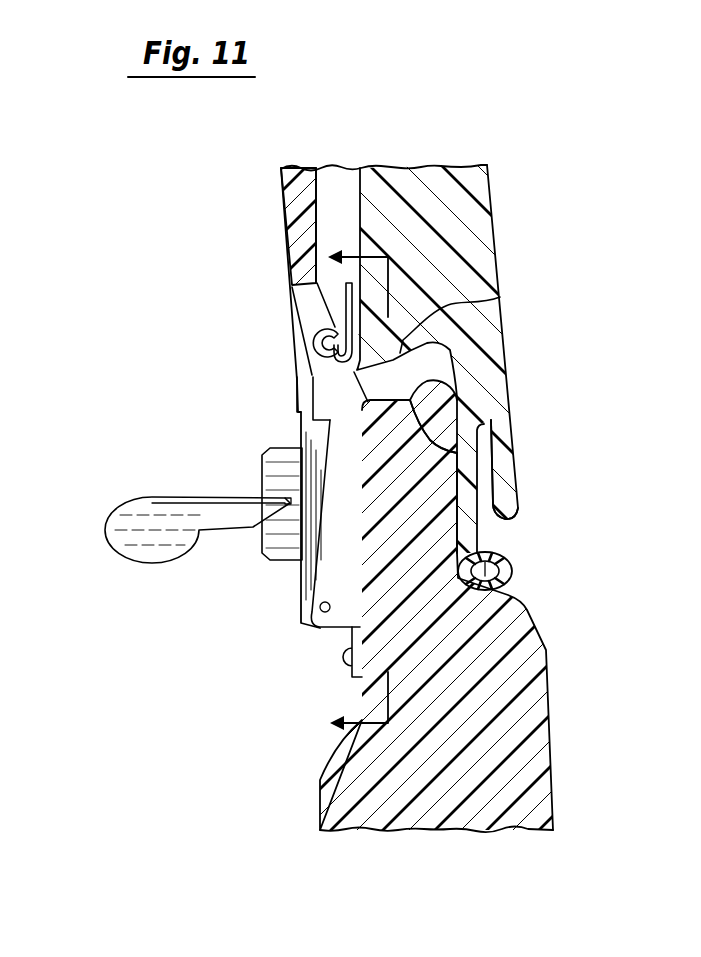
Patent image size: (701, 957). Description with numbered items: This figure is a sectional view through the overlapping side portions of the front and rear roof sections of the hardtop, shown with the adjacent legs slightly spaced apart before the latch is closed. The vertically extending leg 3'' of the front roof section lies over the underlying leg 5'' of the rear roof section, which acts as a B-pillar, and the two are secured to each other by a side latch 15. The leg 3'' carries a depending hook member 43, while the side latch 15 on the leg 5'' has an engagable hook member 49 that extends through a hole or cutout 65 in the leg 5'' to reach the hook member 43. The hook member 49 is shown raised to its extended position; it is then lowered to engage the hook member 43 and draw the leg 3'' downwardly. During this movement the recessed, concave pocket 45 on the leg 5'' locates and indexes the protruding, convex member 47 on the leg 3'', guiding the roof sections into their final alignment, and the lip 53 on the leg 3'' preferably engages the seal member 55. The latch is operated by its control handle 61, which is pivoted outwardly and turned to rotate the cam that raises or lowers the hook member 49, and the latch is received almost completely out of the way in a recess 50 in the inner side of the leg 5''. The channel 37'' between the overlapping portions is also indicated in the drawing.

The leg of the overlapping portion of the front roof section 3'' is at (476, 398).
The leg of the overlapping portion of the rear roof section 5'' is at (361, 531).
The side latch 15 is at (210, 342).
The channel 37'' is at (364, 193).
The depending hook member 43 is at (300, 389).
The recessed pocket 45 is at (420, 400).
The protruding member 47 is at (500, 297).
The hook member 49 is at (312, 338).
The recess 50 is at (357, 688).
The lip 53 is at (510, 513).
The seal member 55 is at (513, 572).
The control handle 61 is at (148, 562).
The hole or cutout 65 is at (300, 306).